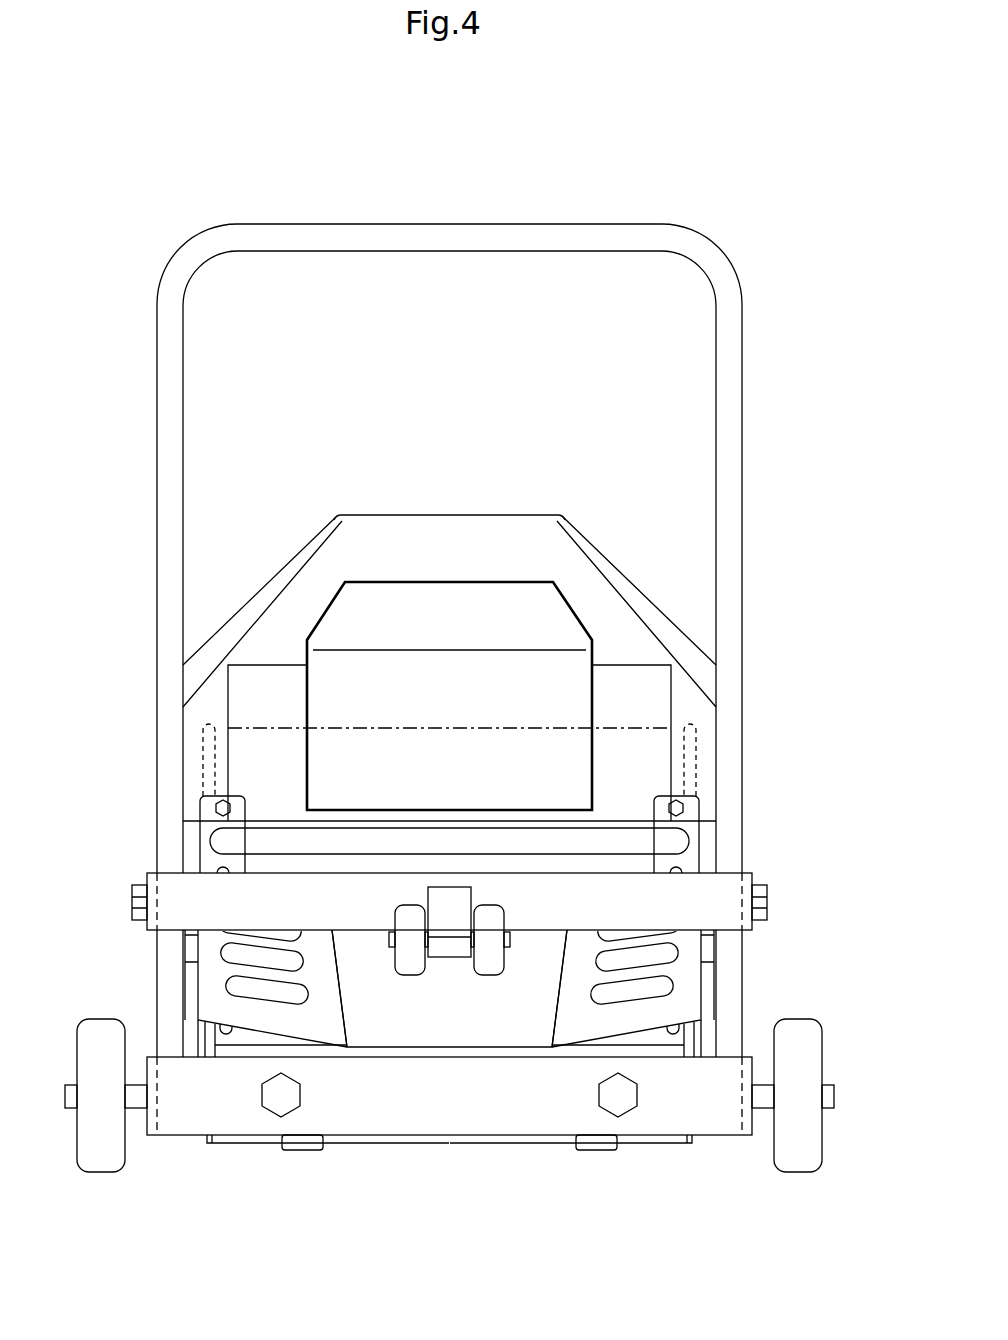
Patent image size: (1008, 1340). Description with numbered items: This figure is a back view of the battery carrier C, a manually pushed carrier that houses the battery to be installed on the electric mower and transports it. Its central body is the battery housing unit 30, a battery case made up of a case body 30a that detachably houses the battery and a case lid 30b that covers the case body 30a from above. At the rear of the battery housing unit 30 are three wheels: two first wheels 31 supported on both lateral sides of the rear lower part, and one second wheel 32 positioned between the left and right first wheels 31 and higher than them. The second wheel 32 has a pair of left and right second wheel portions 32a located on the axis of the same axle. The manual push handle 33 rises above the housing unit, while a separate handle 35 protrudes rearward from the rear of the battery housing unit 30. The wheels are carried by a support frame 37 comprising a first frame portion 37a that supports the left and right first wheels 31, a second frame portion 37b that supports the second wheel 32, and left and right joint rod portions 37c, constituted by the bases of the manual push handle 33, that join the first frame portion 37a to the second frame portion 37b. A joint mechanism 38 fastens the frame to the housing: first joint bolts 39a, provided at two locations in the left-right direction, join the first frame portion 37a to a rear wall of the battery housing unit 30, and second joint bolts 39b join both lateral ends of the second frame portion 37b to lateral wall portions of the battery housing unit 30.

The battery carrier C is at (762, 172).
The battery housing unit 30 is at (512, 619).
The case body 30a is at (635, 747).
The case lid 30b is at (458, 534).
The first wheel 31 is at (103, 1162).
The second wheel 32 is at (449, 1046).
The second wheel portion 32a is at (398, 968).
The manual push handle 33 is at (497, 233).
The handle 35 is at (490, 838).
The support frame 37 is at (462, 977).
The first frame portion 37a is at (400, 1122).
The second frame portion 37b is at (352, 895).
The joint rod portion 37c is at (168, 985).
The joint mechanism 38 is at (449, 1021).
The first joint bolt 39a is at (273, 1103).
The second joint bolt 39b is at (790, 848).